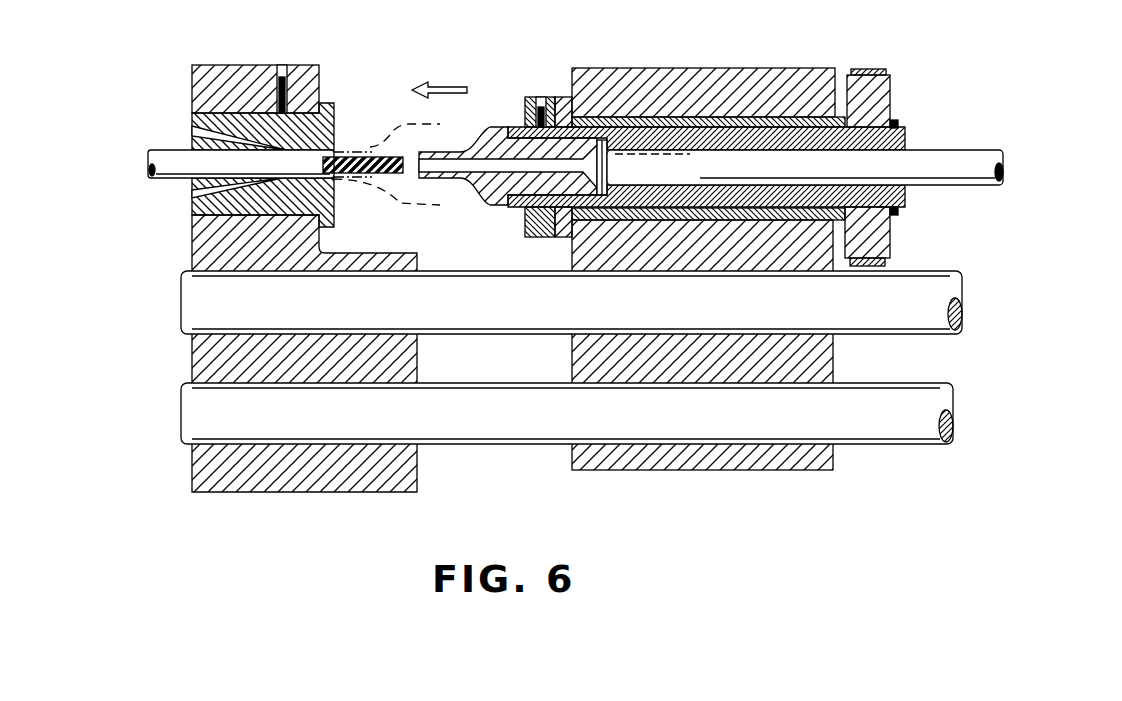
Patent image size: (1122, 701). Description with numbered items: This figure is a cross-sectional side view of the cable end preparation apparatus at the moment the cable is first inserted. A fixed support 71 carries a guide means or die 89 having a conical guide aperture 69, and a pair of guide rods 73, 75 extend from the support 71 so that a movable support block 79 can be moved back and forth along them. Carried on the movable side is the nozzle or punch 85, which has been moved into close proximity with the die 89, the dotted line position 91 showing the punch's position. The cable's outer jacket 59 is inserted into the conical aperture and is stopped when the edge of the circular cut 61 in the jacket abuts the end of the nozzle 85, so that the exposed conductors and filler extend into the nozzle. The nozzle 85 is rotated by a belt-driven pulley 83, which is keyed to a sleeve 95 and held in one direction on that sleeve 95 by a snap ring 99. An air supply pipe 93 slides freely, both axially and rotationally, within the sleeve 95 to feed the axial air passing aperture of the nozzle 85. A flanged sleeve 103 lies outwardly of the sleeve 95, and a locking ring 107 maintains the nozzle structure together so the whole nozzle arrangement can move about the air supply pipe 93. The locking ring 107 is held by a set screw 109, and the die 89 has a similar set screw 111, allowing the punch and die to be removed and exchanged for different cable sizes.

The outer jacket 59 is at (170, 156).
The circular cut 61 is at (324, 178).
The conical guide aperture 69 is at (212, 193).
The support 71 is at (289, 483).
The guide rod 73 is at (887, 332).
The guide rod 75 is at (885, 443).
The movable support block 79 is at (697, 462).
The pulley 83 is at (880, 88).
The nozzle 85 is at (490, 126).
The die 89 is at (225, 118).
The dotted line position 91 is at (368, 145).
The air supply pipe 93 is at (965, 183).
The sleeve 95 is at (906, 198).
The snap ring 99 is at (895, 123).
The flanged sleeve 103 is at (700, 117).
The locking ring 107 is at (526, 224).
The set screw 109 is at (540, 107).
The set screw 111 is at (303, 66).